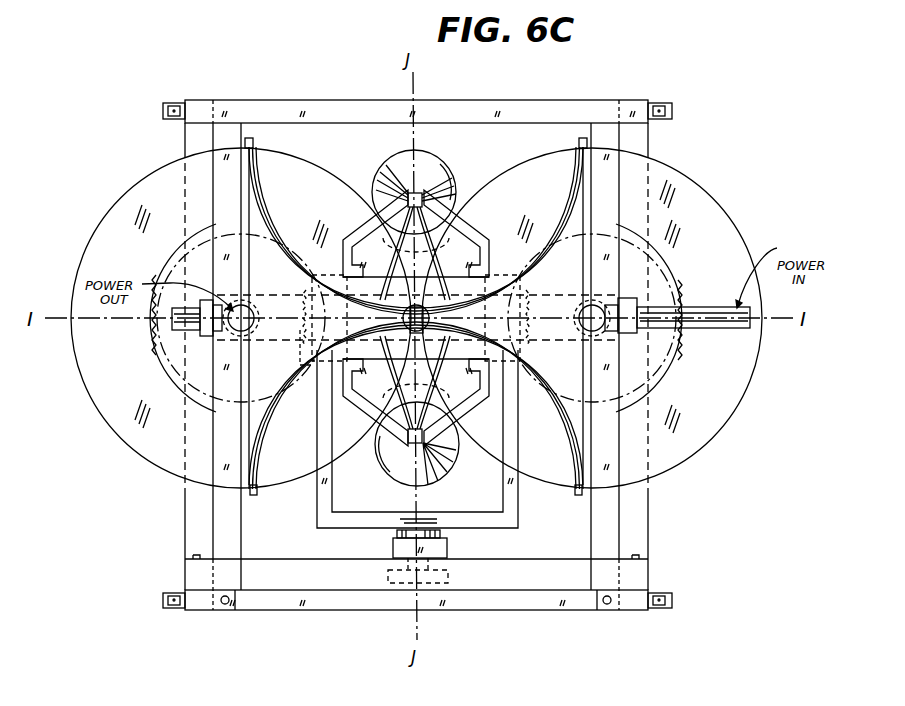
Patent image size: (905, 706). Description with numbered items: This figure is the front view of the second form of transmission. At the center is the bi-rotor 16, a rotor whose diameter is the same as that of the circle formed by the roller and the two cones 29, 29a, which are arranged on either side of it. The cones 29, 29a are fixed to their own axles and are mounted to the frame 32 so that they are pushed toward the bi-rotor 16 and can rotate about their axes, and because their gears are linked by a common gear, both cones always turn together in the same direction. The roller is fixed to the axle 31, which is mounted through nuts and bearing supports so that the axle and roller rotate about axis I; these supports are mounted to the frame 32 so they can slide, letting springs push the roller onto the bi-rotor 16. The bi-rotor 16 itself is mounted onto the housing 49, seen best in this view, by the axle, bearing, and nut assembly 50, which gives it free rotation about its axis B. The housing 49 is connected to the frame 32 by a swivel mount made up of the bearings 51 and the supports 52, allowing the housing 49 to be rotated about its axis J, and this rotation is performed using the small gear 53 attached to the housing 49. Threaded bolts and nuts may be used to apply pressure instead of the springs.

The bi-rotor 16 is at (439, 172).
The cone 29 is at (133, 194).
The right drive wheel 29a is at (688, 182).
The axle 31 is at (718, 328).
The frame 32 is at (546, 79).
The housing 49 is at (502, 522).
The axle, bearing, and nut assembly 50 is at (312, 292).
The bearings 51 is at (440, 533).
The supports 52 is at (397, 549).
The small gear 53 is at (448, 578).